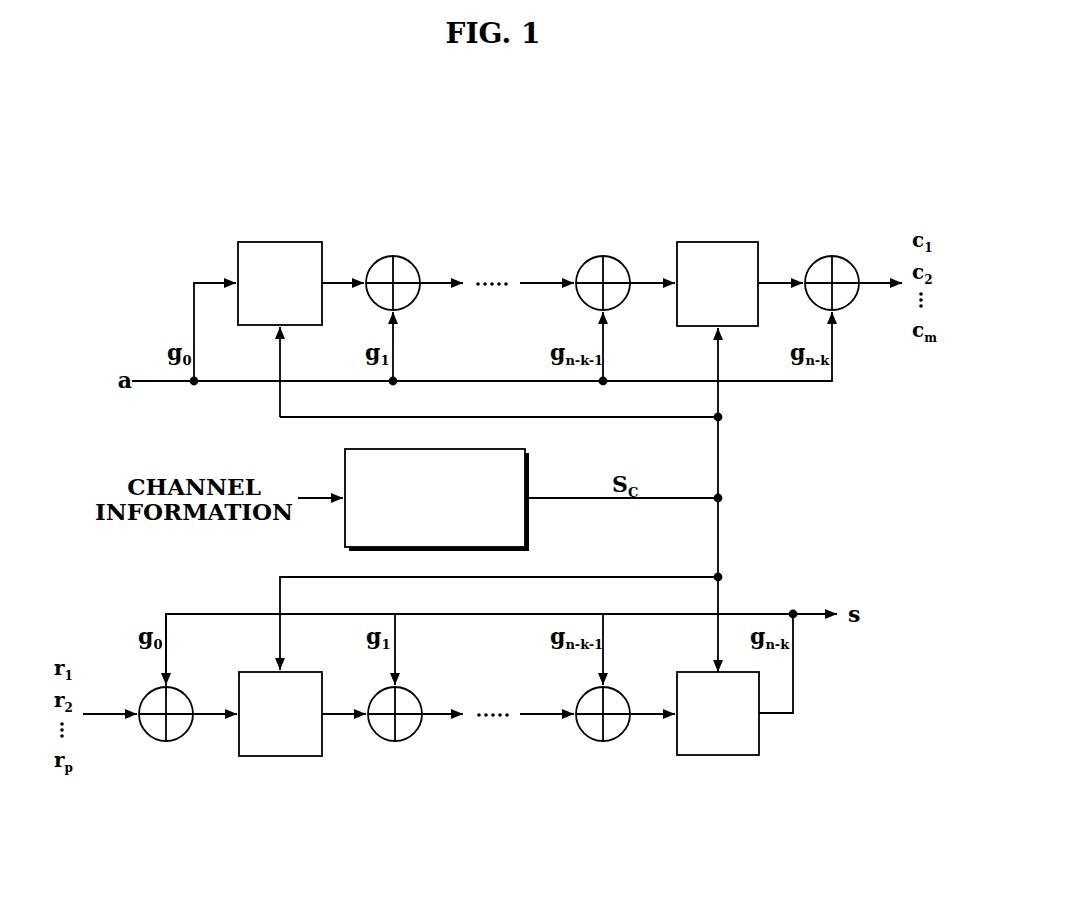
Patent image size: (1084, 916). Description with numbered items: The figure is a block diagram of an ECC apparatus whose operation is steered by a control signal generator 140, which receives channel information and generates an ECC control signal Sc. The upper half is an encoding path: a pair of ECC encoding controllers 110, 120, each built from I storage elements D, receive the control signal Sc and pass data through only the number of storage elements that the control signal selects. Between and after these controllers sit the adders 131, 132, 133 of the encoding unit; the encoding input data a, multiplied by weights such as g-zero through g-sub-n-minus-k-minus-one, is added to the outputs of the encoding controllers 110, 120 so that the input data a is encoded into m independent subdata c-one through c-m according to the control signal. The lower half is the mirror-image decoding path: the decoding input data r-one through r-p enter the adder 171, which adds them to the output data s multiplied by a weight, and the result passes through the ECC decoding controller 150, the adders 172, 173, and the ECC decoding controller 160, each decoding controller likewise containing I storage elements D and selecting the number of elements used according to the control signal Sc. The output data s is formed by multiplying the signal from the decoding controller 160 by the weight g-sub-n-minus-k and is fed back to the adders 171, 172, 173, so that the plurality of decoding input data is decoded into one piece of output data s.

The ECC encoding controller 110 is at (280, 242).
The ECC encoding controller 120 is at (717, 242).
The adder 131 is at (394, 257).
The adder 132 is at (603, 257).
The adder 133 is at (832, 257).
The control signal generator 140 is at (529, 527).
The ECC decoding controller 150 is at (280, 756).
The ECC decoding controller 160 is at (718, 755).
The adder 171 is at (166, 741).
The adder 172 is at (395, 741).
The adder 173 is at (603, 741).